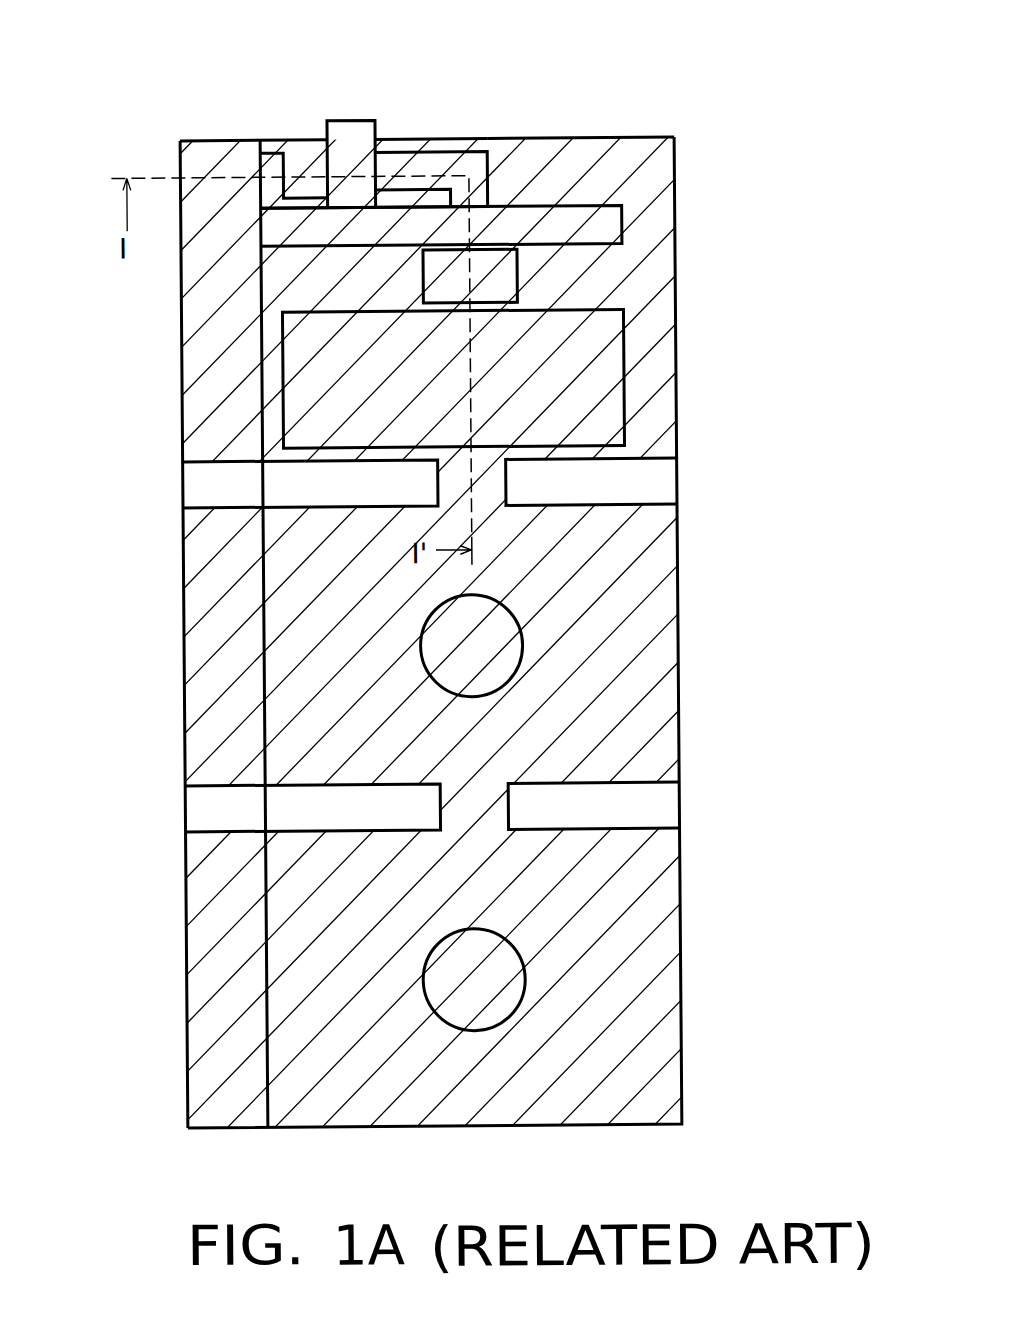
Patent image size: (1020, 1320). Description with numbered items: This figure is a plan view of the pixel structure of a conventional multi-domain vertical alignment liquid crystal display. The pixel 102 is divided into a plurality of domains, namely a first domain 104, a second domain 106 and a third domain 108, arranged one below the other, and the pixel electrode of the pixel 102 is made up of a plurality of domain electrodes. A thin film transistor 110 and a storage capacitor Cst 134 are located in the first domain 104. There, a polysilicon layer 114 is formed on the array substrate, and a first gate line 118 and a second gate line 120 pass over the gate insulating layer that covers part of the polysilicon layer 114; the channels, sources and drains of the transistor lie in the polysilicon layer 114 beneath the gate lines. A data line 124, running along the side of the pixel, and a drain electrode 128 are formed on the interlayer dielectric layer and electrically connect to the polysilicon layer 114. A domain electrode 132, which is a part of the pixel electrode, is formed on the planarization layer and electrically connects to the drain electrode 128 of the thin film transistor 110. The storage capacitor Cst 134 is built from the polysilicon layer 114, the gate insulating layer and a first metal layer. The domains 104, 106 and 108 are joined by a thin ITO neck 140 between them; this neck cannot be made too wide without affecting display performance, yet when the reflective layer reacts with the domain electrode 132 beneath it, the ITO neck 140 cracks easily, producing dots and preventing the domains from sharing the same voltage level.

The pixel 102 is at (838, 210).
The first domain 104 is at (681, 233).
The second domain 106 is at (678, 617).
The third domain 108 is at (678, 964).
The thin film transistor 110 is at (401, 132).
The polysilicon layer 114 is at (477, 160).
The first gate line 118 is at (355, 147).
The second gate line 120 is at (603, 226).
The data line 124 is at (184, 291).
The drain electrode 128 is at (506, 274).
The domain electrode 132 is at (597, 163).
The storage capacitor Cst 134 is at (600, 374).
The ITO neck 140 is at (456, 488).